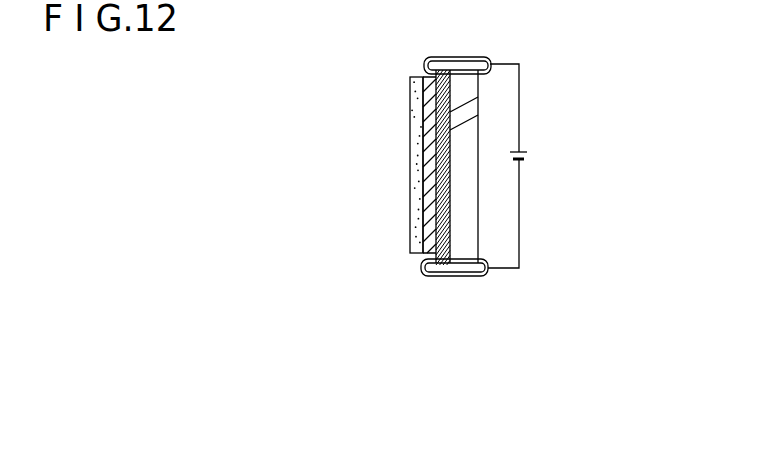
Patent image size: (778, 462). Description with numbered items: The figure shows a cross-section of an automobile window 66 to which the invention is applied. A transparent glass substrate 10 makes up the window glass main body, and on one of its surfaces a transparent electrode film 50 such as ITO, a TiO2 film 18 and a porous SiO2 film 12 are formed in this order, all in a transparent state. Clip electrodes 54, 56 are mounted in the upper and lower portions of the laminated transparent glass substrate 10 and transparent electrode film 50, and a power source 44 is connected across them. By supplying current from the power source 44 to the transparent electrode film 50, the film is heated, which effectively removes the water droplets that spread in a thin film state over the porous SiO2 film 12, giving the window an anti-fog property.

The transparent glass substrate 10 is at (467, 220).
The porous SiO2 film 12 is at (408, 210).
The TiO2 film 18 is at (430, 238).
The power source 44 is at (523, 151).
The transparent electrode film 50 is at (435, 268).
The clip electrode 54 is at (450, 57).
The clip electrode 56 is at (463, 275).
The automobile window 66 is at (593, 81).